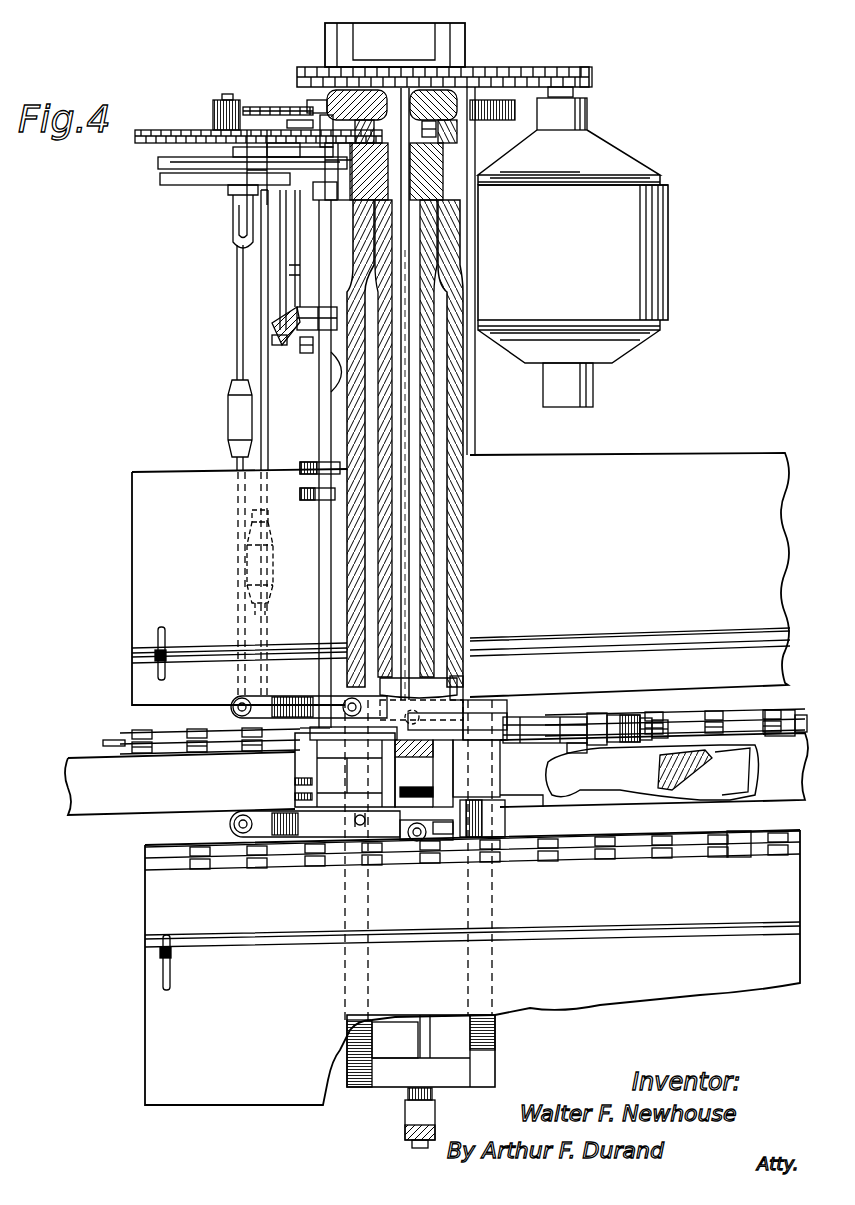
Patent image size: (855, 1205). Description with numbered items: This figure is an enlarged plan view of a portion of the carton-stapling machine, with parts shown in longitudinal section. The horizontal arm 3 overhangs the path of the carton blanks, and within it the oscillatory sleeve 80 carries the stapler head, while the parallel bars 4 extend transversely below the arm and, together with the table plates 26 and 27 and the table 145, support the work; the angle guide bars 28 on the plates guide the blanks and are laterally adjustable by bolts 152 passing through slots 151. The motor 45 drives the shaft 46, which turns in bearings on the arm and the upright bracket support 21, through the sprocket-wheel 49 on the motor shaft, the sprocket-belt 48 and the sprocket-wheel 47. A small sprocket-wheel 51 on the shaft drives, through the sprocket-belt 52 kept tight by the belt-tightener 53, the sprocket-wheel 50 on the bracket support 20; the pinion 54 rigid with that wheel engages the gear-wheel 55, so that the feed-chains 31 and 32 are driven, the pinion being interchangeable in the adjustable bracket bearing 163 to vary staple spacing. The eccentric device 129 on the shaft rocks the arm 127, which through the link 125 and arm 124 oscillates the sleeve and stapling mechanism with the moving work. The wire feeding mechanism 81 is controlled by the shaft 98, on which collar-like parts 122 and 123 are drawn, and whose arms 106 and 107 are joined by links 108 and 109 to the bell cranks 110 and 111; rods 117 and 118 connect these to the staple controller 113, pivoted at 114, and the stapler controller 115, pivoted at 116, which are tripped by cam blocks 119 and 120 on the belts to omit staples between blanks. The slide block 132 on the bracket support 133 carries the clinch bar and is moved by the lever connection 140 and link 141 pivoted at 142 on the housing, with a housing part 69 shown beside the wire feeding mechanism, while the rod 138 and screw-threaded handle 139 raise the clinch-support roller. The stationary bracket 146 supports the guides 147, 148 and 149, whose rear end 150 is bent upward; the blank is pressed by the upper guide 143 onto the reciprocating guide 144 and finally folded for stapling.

The arm 3 is at (463, 417).
The parallel bars 4 is at (352, 1080).
The bracket support 20 is at (178, 190).
The upright bracket support 21 is at (388, 44).
The table plate 26 is at (693, 478).
The table plate 27 is at (210, 1092).
The angle guide bars 28 is at (145, 656).
The feed-chain 31 is at (125, 742).
The feed-chain 32 is at (175, 862).
The electric motor 45 is at (641, 241).
The shaft 46 is at (410, 504).
The sprocket-wheel 47 is at (320, 80).
The sprocket-belt 48 is at (527, 67).
The sprocket-wheel 49 is at (585, 88).
The sprocket-wheel 50 is at (158, 140).
The small sprocket-wheel 51 is at (440, 130).
The sprocket-belt 52 is at (183, 130).
The belt-tightener 53 is at (268, 133).
The pinion 54 is at (218, 112).
The gear-wheel 55 is at (513, 110).
The housing 69 is at (297, 771).
The sleeve 80 is at (430, 440).
The wire feeding mechanism 81 is at (297, 791).
The shaft 98 is at (330, 610).
The arm 106 is at (313, 310).
The arm 107 is at (330, 390).
The link 108 is at (287, 318).
The link 109 is at (300, 354).
The bell crank 110 is at (293, 277).
The bell crank 111 is at (277, 250).
The staple controller 113 is at (313, 707).
The pivot 114 is at (350, 700).
The stapler controller 115 is at (285, 830).
The pivot 116 is at (357, 828).
The rod 117 is at (240, 338).
The rod 118 is at (260, 362).
The cam blocks 119 is at (770, 710).
The cam blocks 120 is at (740, 835).
The collar 122 is at (313, 463).
The collar 123 is at (307, 500).
The arm 124 is at (240, 185).
The link 125 is at (250, 195).
The arm 127 is at (165, 167).
The eccentric device 129 is at (440, 75).
The slide block 132 is at (550, 720).
The bracket support 133 is at (580, 722).
The rod 138 is at (418, 1025).
The screw-threaded handle 139 is at (406, 1118).
The lever connection 140 is at (493, 717).
The link 141 is at (413, 717).
The pivot 142 is at (463, 715).
The upper guide 143 is at (527, 790).
The guide 144 is at (503, 828).
The table 145 is at (103, 803).
The stationary bracket 146 is at (595, 712).
The guide 147 is at (600, 790).
The guide 148 is at (727, 768).
The guide 149 is at (642, 718).
The rear end 150 is at (700, 752).
The slots 151 is at (158, 637).
The bolts 152 is at (158, 662).
The bracket bearing 163 is at (240, 225).